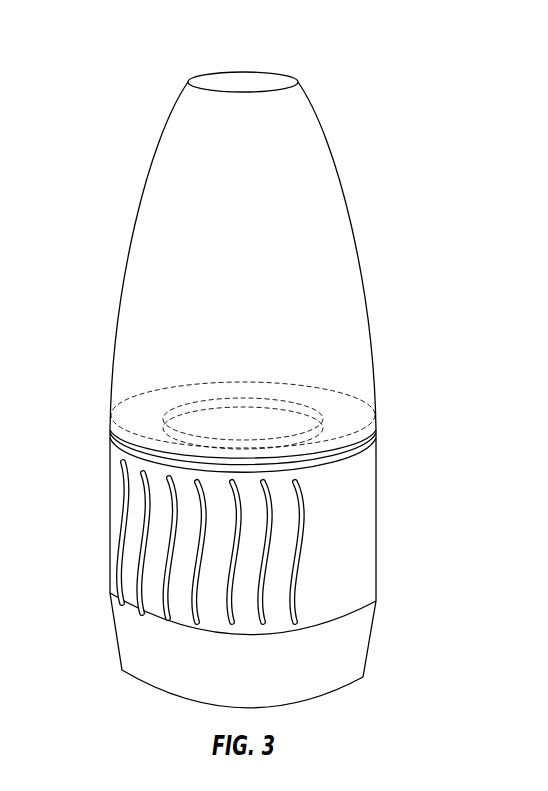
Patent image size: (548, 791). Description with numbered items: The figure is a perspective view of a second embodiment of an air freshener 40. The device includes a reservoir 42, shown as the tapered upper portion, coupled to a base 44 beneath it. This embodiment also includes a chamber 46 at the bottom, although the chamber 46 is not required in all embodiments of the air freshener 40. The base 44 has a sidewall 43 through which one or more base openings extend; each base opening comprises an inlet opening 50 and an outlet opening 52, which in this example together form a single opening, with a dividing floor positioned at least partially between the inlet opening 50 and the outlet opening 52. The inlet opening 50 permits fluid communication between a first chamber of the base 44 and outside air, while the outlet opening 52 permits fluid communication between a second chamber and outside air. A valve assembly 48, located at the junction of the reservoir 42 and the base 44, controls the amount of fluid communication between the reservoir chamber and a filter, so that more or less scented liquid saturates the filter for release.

The air freshener 40 is at (269, 390).
The reservoir 42 is at (138, 253).
The sidewall 43 is at (360, 572).
The base 44 is at (254, 532).
The chamber 46 is at (360, 642).
The valve assembly 48 is at (242, 427).
The inlet opening 50 is at (143, 489).
The outlet opening 52 is at (137, 590).